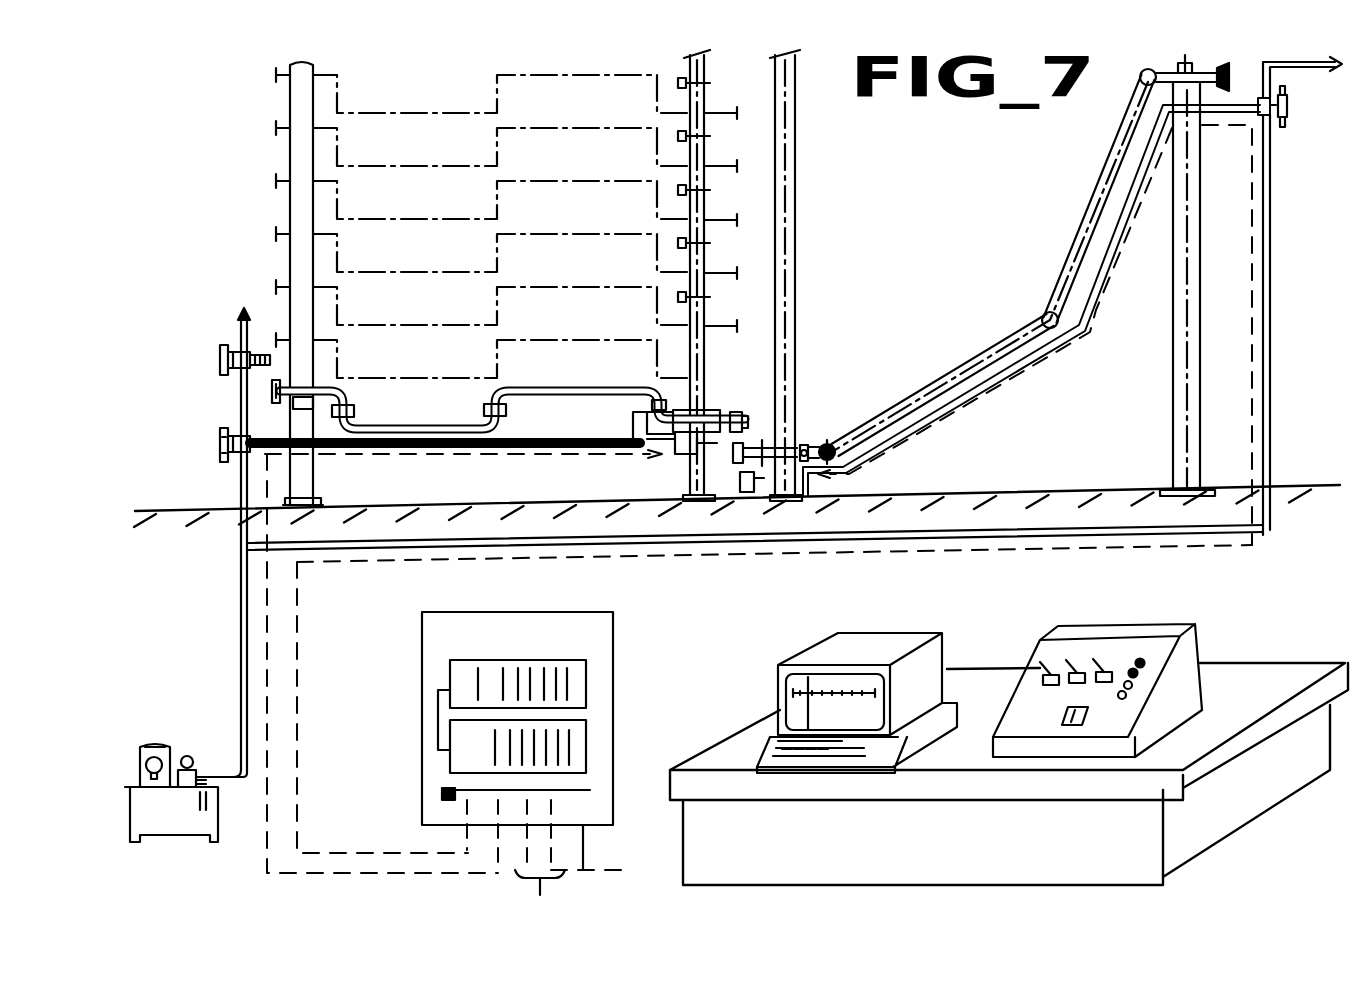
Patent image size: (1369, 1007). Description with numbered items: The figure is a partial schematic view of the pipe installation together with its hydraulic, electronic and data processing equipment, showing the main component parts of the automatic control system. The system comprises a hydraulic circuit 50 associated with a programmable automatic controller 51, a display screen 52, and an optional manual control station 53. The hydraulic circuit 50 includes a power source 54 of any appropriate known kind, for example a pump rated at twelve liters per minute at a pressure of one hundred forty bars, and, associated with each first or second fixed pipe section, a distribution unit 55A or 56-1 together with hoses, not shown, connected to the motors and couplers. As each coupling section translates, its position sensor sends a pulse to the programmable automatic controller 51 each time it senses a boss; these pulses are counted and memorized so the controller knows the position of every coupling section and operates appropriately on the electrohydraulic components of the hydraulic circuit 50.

The hydraulic circuit 50 is at (230, 648).
The programmable automatic controller 51 is at (613, 650).
The display screen 52 is at (789, 768).
The manual control station 53 is at (1192, 644).
The power source 54 is at (171, 832).
The distribution unit 55A is at (221, 445).
The distribution unit 56-1 is at (1290, 107).